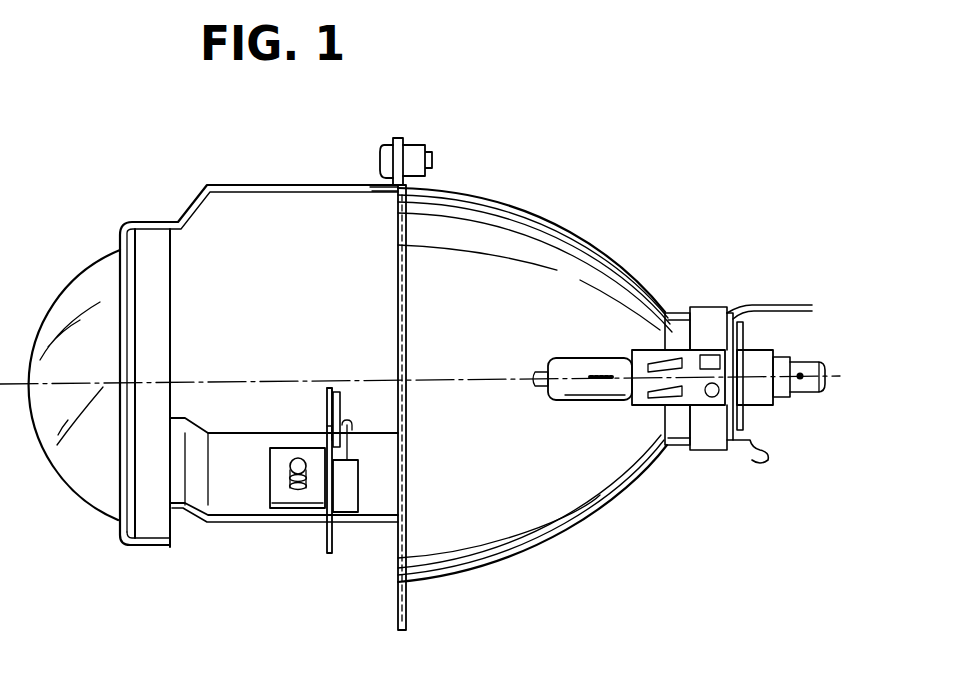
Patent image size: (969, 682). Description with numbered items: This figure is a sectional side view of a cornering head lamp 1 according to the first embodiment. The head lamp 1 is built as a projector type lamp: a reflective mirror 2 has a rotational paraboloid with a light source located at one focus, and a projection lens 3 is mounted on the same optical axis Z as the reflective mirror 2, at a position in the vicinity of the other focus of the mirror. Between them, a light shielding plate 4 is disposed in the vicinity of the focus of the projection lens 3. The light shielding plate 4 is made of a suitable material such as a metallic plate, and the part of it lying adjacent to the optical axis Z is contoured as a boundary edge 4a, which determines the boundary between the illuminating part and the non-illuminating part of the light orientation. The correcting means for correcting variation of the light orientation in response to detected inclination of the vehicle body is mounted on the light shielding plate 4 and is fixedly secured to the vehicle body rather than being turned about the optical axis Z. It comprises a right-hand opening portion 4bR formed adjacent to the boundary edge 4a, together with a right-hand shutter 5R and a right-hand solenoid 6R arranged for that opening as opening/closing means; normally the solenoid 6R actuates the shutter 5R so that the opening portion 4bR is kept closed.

The cornering head lamp 1 is at (608, 223).
The reflective mirror 2 is at (586, 506).
The projection lens 3 is at (97, 480).
The light shielding plate 4 is at (325, 535).
The boundary edge 4a is at (328, 392).
The right-hand opening portion 4bR is at (330, 432).
The right-hand shutter 5R is at (338, 412).
The right-hand solenoid 6R is at (345, 500).
The optical axis Z is at (459, 379).